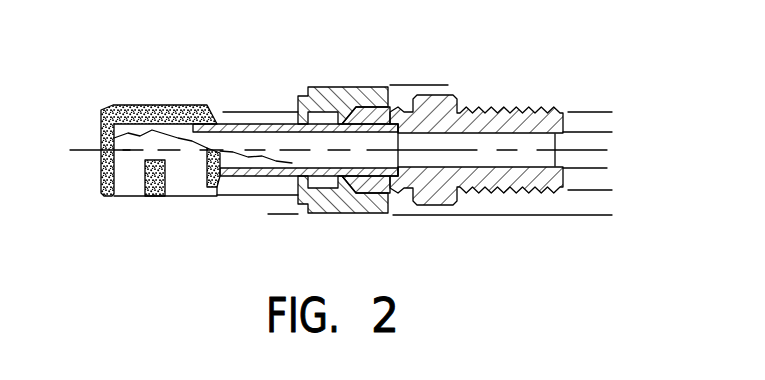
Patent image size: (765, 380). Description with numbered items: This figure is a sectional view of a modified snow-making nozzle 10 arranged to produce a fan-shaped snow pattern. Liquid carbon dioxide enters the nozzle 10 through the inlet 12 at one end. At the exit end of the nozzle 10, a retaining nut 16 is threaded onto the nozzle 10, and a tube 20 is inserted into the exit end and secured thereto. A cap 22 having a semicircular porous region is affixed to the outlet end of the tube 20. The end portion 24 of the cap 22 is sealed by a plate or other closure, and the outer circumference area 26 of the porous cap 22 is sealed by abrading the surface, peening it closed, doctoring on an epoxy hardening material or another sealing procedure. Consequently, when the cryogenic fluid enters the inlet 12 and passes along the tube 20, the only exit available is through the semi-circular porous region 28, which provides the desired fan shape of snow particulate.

The nozzle 10 is at (539, 222).
The inlet 12 is at (543, 163).
The retaining nut 16 is at (340, 212).
The tube 20 is at (247, 123).
The cap 22 is at (156, 107).
The end portion 24 is at (82, 150).
The outer circumference area 26 is at (126, 197).
The semi-circular porous region 28 is at (148, 197).